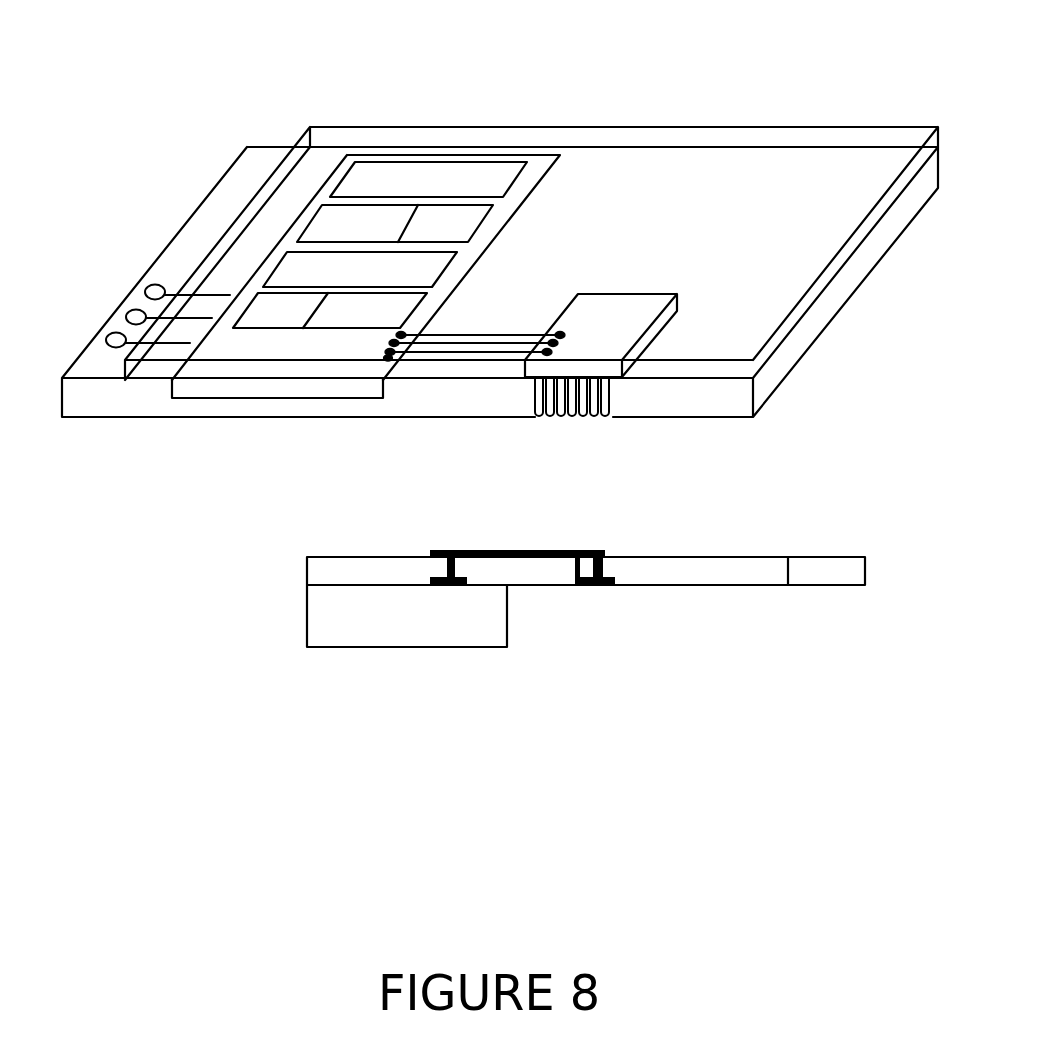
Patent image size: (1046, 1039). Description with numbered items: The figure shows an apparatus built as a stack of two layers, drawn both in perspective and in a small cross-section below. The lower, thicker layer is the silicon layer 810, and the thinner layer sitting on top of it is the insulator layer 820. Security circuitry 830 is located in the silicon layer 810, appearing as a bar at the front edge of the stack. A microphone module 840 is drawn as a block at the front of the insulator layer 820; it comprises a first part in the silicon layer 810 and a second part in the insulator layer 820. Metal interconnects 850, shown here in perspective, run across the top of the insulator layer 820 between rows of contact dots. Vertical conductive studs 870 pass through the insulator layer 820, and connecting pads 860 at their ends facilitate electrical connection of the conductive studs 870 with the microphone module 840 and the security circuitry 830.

The silicon layer 810 is at (222, 173).
The insulator layer 820 is at (413, 125).
The security circuitry 830 is at (267, 388).
The microphone module 840 is at (601, 355).
The metal interconnects 850 is at (468, 360).
The connecting pads 860 is at (438, 587).
The vertical conductive studs 870 is at (447, 560).